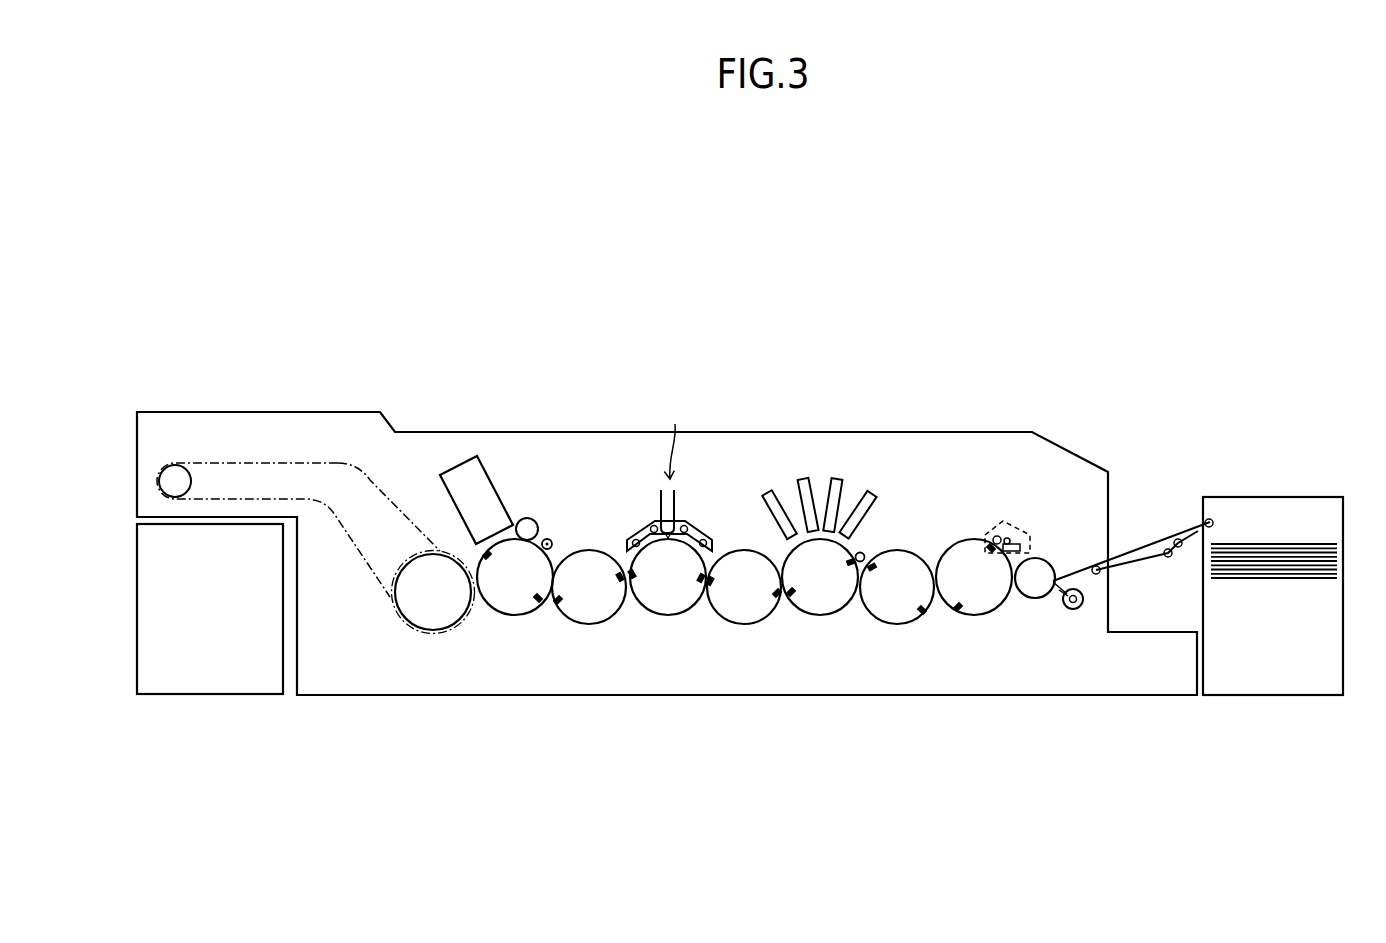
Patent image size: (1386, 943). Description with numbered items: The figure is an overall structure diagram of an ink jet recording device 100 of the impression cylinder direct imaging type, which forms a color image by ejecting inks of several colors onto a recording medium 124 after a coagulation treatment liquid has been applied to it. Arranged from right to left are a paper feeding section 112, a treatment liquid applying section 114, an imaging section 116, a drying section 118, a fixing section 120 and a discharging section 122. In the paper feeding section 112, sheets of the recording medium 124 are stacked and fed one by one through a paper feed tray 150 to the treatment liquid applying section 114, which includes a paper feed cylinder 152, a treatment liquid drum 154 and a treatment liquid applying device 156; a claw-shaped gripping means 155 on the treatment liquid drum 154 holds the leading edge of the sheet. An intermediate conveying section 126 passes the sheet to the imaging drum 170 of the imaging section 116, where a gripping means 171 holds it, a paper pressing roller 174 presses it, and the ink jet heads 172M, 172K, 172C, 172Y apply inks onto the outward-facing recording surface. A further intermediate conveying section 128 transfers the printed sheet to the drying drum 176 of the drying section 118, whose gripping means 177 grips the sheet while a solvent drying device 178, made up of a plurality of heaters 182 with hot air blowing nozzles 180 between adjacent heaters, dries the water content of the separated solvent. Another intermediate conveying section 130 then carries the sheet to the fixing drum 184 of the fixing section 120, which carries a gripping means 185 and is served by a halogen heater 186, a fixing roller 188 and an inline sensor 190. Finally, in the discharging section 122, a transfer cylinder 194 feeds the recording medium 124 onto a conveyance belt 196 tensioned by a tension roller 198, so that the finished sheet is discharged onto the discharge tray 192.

The ink jet recording device 100 is at (1048, 289).
The paper feeding section 112 is at (1234, 708).
The treatment liquid applying section 114 is at (976, 621).
The imaging section 116 is at (803, 621).
The drying section 118 is at (650, 621).
The fixing section 120 is at (492, 621).
The discharging section 122 is at (302, 706).
The recording medium 124 is at (1275, 579).
The intermediate conveying section 126 is at (882, 622).
The intermediate conveying section 128 is at (727, 622).
The intermediate conveying section 130 is at (568, 622).
The paper feed tray 150 is at (1148, 542).
The paper feed cylinder 152 is at (1036, 599).
The treatment liquid drum 154 is at (990, 615).
The gripping means 155 is at (955, 614).
The treatment liquid applying device 156 is at (1011, 509).
The imaging drum 170 is at (822, 612).
The gripping means 171 is at (792, 603).
The ink jet head 172Y is at (768, 492).
The ink jet head 172C is at (804, 478).
The ink jet head 172K is at (840, 478).
The ink jet head 172M is at (874, 491).
The paper pressing roller 174 is at (864, 554).
The drying drum 176 is at (667, 612).
The gripping means 177 is at (633, 593).
The solvent drying device 178 is at (675, 434).
The hot air blowing nozzle 180 is at (676, 503).
The heater 182 is at (631, 529).
The fixing drum 184 is at (509, 606).
The gripping means 185 is at (492, 556).
The halogen heater 186 is at (553, 540).
The fixing roller 188 is at (523, 518).
The inline sensor 190 is at (449, 469).
The discharge tray 192 is at (209, 695).
The transfer cylinder 194 is at (409, 623).
The conveyance belt 196 is at (243, 463).
The tension roller 198 is at (175, 463).